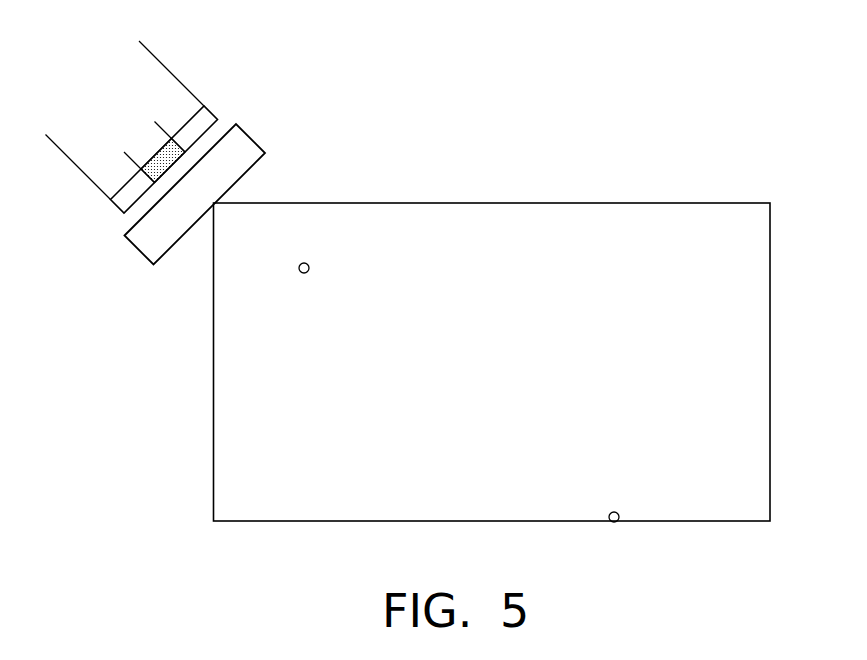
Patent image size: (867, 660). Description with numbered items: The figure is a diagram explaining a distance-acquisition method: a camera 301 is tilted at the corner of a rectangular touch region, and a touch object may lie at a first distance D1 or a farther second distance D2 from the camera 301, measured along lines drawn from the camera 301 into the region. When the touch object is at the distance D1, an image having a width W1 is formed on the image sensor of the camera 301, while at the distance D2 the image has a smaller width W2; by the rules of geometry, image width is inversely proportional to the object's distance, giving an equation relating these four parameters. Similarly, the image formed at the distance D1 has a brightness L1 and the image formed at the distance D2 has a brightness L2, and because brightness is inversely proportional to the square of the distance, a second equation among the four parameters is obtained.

The camera 301 is at (254, 140).
The width of image at distance D1 W1 is at (142, 44).
The width of image at distance D2 W2 is at (184, 96).
The first distance D1 is at (214, 203).
The second distance D2 is at (214, 218).
The brightness of image at distance D1 L1 is at (309, 268).
The brightness of image at distance D2 L2 is at (619, 511).